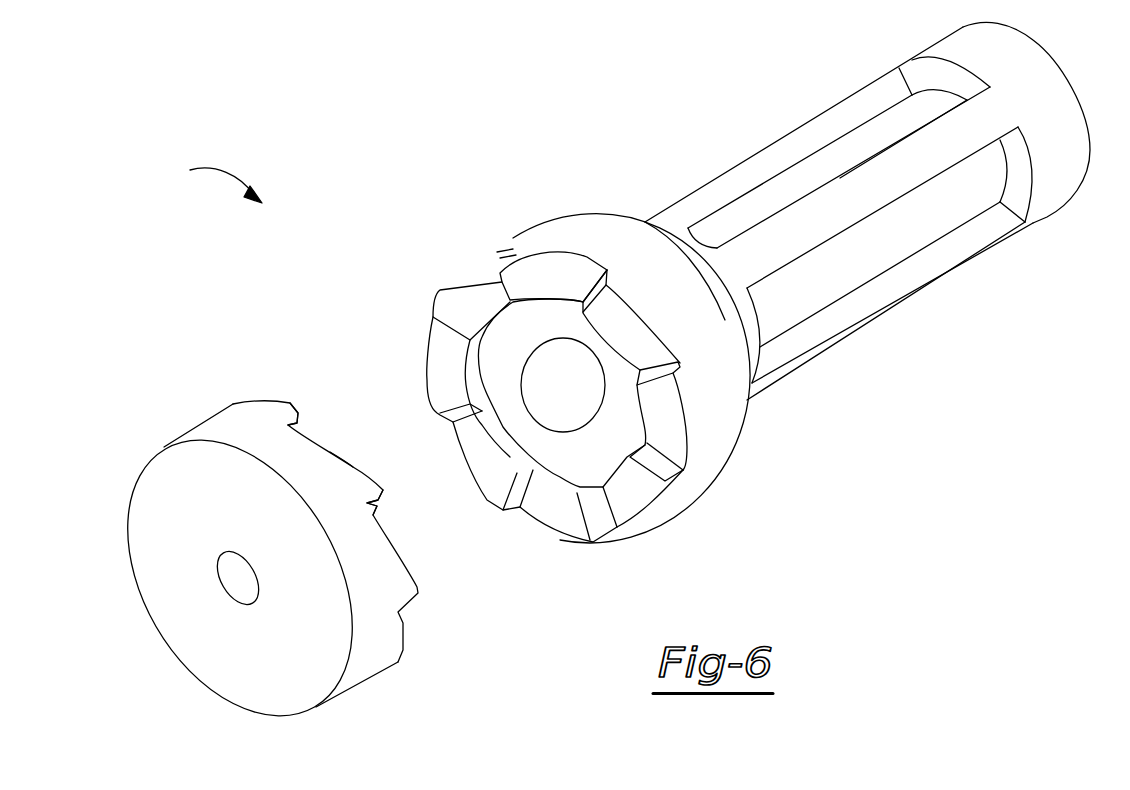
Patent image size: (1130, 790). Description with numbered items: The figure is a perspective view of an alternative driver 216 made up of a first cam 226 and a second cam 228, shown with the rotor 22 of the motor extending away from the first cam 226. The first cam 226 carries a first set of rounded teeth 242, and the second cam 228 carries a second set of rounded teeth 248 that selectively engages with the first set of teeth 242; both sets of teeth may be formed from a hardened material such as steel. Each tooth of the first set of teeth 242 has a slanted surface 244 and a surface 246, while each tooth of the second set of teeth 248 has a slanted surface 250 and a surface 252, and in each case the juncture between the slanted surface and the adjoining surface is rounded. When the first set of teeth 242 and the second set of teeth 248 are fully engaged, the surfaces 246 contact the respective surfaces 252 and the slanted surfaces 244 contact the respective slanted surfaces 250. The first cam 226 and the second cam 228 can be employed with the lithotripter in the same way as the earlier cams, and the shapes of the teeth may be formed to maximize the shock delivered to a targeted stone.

The driver 216 is at (203, 182).
The rotor 22 is at (738, 170).
The first cam 226 is at (727, 432).
The first set of rounded teeth 242 is at (553, 247).
The slanted surface 244 is at (503, 260).
The surface 246 is at (513, 270).
The second cam 228 is at (158, 472).
The second set of rounded teeth 248 is at (325, 440).
The slanted surface 250 is at (352, 455).
The surface 252 is at (380, 508).